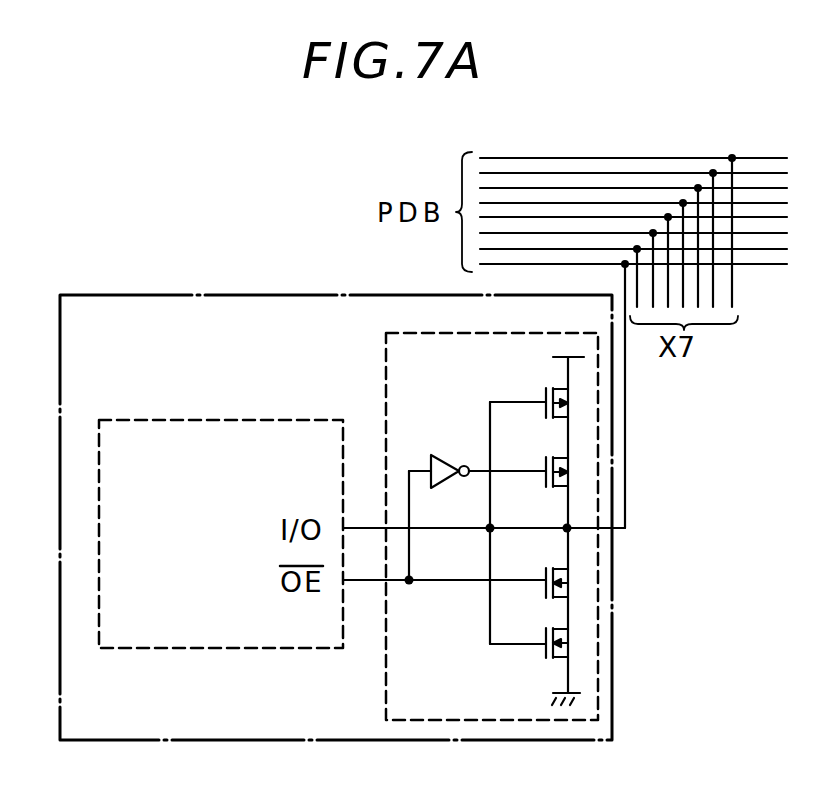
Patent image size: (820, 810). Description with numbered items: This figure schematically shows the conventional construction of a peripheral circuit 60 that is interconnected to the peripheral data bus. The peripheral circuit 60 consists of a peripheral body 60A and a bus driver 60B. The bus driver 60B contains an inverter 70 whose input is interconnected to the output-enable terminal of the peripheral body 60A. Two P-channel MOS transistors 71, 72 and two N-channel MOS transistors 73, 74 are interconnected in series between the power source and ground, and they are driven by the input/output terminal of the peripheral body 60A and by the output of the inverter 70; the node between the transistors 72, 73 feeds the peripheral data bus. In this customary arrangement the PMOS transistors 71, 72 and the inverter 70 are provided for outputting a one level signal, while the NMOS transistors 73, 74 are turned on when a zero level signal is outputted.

The peripheral circuit 60 is at (222, 295).
The peripheral body 60A is at (190, 420).
The bus driver 60B is at (385, 383).
The inverter 70 is at (447, 453).
The P-channel MOS transistor 71 is at (546, 396).
The P-channel MOS transistor 72 is at (546, 481).
The N-channel MOS transistor 73 is at (546, 590).
The N-channel MOS transistor 74 is at (546, 650).